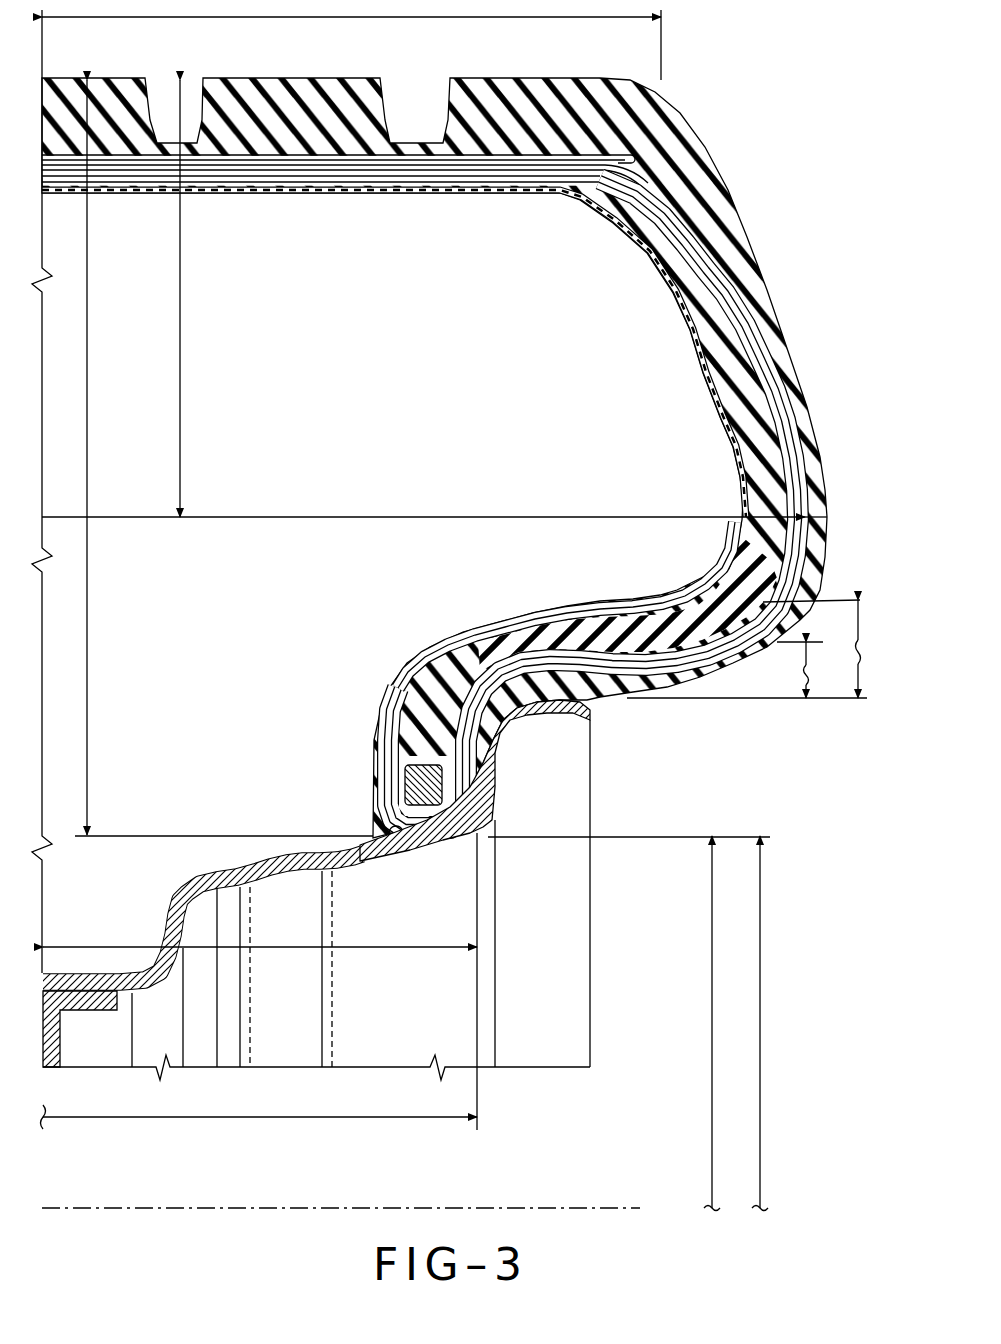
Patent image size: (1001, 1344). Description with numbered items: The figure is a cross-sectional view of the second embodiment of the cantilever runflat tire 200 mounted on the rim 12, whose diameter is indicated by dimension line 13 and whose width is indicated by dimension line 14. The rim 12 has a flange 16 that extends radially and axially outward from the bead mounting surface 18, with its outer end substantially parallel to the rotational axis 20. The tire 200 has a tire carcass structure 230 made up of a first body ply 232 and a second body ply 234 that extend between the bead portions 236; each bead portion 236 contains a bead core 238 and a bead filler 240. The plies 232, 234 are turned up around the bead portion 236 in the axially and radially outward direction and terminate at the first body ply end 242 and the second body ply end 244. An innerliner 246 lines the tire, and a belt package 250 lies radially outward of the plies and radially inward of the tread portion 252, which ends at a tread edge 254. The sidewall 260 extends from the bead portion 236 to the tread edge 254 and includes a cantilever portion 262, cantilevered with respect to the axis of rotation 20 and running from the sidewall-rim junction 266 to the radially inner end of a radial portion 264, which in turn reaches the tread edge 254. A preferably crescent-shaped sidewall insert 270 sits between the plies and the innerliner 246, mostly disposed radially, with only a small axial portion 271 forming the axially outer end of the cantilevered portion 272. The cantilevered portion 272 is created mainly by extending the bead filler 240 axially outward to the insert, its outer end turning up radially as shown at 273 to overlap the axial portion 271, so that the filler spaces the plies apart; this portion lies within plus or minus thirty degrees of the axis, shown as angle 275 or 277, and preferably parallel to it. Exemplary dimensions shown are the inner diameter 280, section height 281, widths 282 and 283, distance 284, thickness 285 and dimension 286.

The cantilever runflat tire 200 is at (716, 132).
The belt package 250 is at (457, 152).
The tread portion 252 is at (338, 74).
The tread edge 254 is at (664, 93).
The tire carcass structure 230 is at (317, 198).
The first body ply 232 is at (263, 190).
The second body ply 234 is at (380, 180).
The innerliner 246 is at (455, 178).
The first body ply end 242 is at (775, 368).
The second body ply end 244 is at (790, 422).
The sidewall 260 is at (696, 404).
The radial portion 264 is at (673, 339).
The cantilever portion 262 is at (589, 588).
The sidewall insert 270 is at (701, 573).
The cantilevered portion 272 is at (548, 640).
The turned-up end of bead filler 273 is at (733, 545).
The axial portion of insert 271 is at (677, 603).
The sidewall-rim junction 266 is at (595, 702).
The bead portion 236 is at (402, 750).
The bead core 238 is at (404, 784).
The bead filler 240 is at (443, 697).
The rim 12 is at (588, 890).
The dimension line for rim diameter 13 is at (762, 950).
The dimension line for rim width 14 is at (250, 1120).
The flange 16 is at (563, 706).
The bead mounting surface 18 is at (400, 838).
The rotational axis 20 is at (500, 1208).
The inner diameter 280 is at (710, 950).
The section height 281 is at (100, 666).
The width 282 is at (318, 22).
The width 283 is at (325, 510).
The distance 284 is at (200, 378).
The thickness 285 is at (847, 462).
The dimension 286 is at (364, 948).
The angle 275 is at (797, 699).
The angle 277 is at (747, 668).